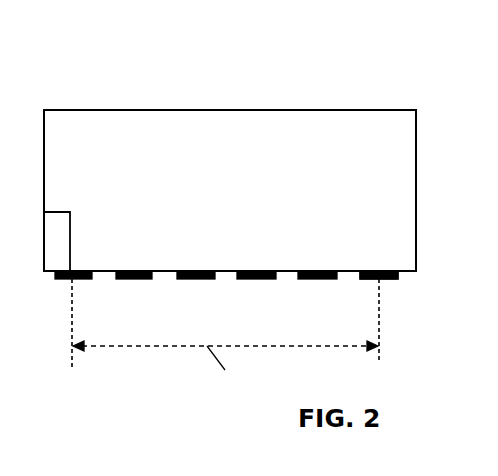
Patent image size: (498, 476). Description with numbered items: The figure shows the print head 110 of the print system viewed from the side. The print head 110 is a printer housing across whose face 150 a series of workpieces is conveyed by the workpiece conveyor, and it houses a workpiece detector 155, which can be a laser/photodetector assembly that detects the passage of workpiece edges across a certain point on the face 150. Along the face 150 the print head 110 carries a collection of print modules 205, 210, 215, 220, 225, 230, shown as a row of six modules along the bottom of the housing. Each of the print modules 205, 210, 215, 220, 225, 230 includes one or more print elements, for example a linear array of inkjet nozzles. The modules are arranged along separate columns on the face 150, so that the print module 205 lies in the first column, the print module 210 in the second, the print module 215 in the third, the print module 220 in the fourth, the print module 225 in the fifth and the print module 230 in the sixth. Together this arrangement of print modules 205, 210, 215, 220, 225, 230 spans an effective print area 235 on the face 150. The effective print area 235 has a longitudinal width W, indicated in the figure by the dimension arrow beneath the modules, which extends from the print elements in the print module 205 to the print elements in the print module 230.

The print head 110 is at (322, 80).
The face 150 is at (350, 270).
The workpiece detector 155 is at (57, 239).
The print module 205 is at (75, 279).
The print module 210 is at (133, 279).
The print module 215 is at (193, 279).
The print module 220 is at (253, 279).
The print module 225 is at (313, 279).
The print module 230 is at (385, 279).
The effective print area 235 is at (198, 385).